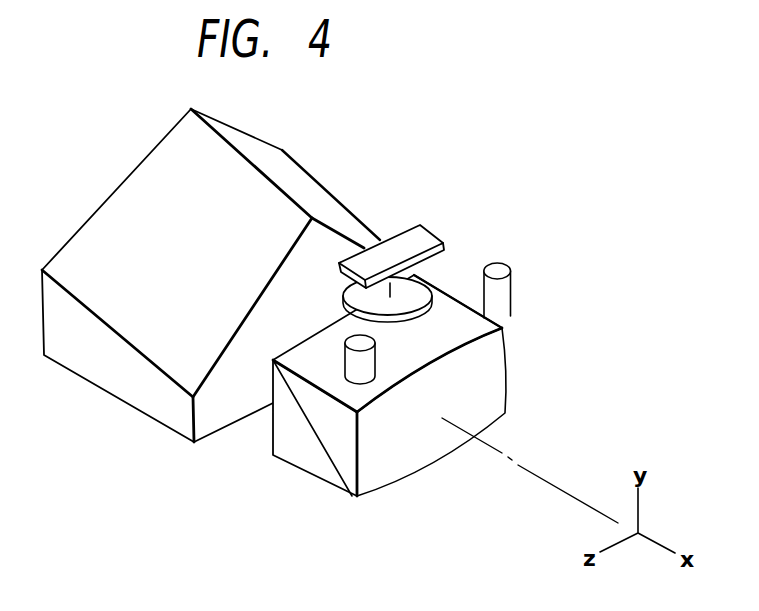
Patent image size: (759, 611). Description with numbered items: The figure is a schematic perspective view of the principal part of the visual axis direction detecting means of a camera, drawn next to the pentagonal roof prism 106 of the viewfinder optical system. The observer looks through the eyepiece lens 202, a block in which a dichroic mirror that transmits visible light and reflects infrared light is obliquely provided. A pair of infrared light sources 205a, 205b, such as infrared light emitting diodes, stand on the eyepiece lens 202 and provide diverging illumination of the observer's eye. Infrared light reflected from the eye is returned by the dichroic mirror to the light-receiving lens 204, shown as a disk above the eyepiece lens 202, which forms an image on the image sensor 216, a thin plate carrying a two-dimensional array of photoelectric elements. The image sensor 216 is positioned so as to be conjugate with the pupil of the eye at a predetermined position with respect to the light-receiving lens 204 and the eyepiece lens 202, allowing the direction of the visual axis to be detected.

The pentagonal roof prism 106 is at (303, 163).
The eyepiece lens 202 is at (505, 368).
The light-receiving lens 204 is at (427, 323).
The infrared light source 205a is at (512, 287).
The infrared light source 205b is at (372, 364).
The image sensor 216 is at (410, 224).